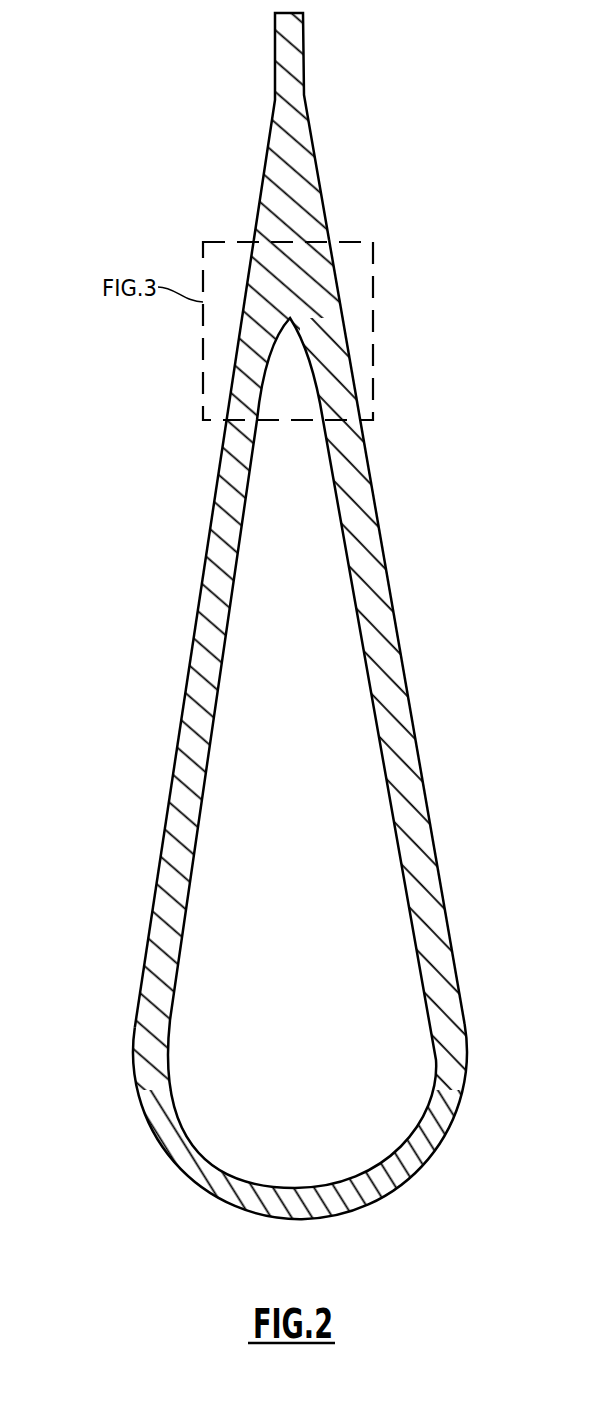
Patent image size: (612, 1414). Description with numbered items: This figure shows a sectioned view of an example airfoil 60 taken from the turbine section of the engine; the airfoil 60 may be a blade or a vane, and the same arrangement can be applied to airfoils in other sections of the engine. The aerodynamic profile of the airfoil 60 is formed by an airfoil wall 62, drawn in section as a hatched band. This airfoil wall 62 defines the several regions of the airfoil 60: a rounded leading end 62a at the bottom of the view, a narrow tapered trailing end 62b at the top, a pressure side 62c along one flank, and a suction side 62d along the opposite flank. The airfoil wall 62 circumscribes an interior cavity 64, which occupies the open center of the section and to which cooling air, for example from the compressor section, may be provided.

The airfoil 60 is at (269, 644).
The airfoil wall 62 is at (298, 644).
The leading end 62a is at (346, 1228).
The trailing end 62b is at (332, 125).
The pressure side 62c is at (397, 637).
The suction side 62d is at (183, 700).
The interior cavity 64 is at (312, 875).